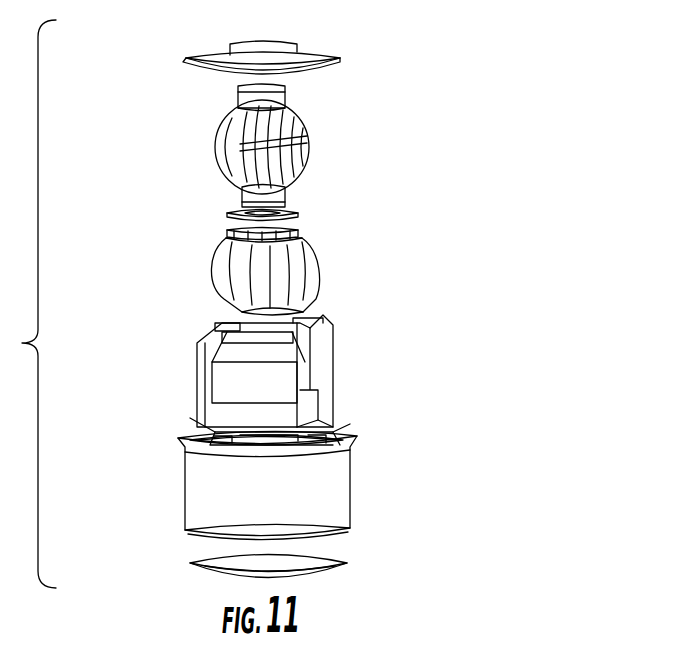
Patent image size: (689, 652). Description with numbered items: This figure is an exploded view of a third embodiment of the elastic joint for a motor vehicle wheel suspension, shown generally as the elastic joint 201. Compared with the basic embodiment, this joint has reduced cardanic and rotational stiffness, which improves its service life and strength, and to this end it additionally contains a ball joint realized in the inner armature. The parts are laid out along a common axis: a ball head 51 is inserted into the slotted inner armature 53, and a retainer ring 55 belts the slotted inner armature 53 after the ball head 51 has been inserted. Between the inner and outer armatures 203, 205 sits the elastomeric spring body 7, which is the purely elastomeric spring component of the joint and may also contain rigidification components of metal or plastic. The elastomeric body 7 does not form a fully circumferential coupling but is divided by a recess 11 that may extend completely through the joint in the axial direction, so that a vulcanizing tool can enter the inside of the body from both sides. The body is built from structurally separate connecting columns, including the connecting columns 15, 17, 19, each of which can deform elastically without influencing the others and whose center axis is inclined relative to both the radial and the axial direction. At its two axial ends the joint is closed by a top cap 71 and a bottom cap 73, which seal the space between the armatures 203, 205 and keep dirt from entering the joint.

The armature 203 is at (190, 187).
The elastic joint embodiment 201 is at (447, 252).
The bottom cap 73 is at (187, 66).
The ball head 51 is at (304, 120).
The retainer ring 55 is at (300, 212).
The slotted inner armature 53 is at (305, 237).
The elastomeric spring body 7 is at (345, 363).
The connecting column 19 is at (197, 353).
The connecting column 17 is at (325, 322).
The connecting column 15 is at (208, 417).
The recess 11 is at (333, 418).
The armature 205 is at (350, 473).
The top cap 71 is at (197, 567).